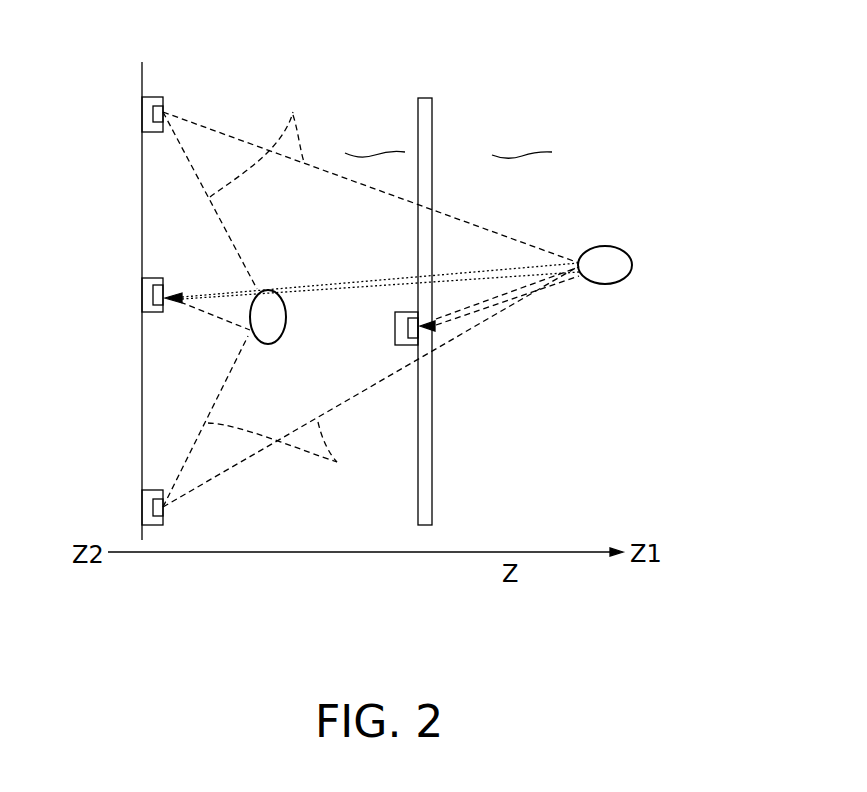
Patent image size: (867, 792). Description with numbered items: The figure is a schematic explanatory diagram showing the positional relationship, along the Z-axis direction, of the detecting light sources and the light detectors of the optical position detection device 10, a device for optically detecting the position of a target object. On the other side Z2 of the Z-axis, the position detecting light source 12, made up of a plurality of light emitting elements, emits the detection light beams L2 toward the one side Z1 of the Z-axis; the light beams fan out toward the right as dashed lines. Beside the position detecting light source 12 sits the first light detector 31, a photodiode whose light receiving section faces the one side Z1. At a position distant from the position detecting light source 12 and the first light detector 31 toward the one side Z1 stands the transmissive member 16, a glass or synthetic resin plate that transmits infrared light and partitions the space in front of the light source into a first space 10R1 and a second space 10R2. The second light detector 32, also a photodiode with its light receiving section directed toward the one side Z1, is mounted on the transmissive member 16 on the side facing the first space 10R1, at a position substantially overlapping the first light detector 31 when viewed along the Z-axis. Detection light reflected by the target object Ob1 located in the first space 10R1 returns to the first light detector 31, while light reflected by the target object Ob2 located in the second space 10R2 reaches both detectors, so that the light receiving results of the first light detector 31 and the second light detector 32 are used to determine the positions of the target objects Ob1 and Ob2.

The optical position detection device 10 is at (553, 83).
The position detecting light source 12 is at (163, 97).
The transmissive member 16 is at (430, 98).
The first light detector 31 is at (142, 302).
The second light detector 32 is at (395, 344).
The detection light beams L2 is at (307, 302).
The target object Ob1 is at (272, 344).
The target object Ob2 is at (618, 247).
The first space 10R1 is at (376, 140).
The second space 10R2 is at (523, 140).